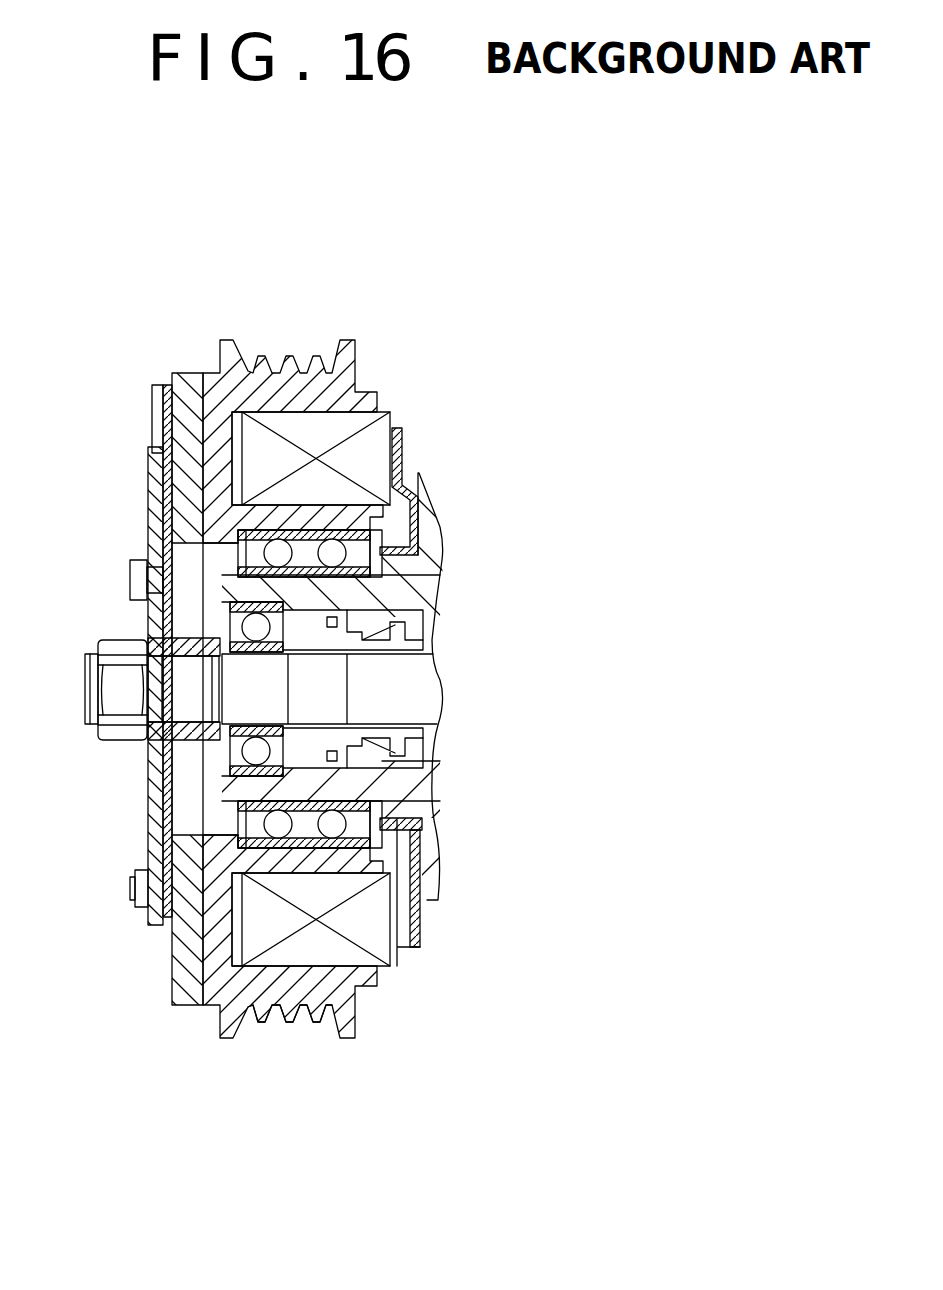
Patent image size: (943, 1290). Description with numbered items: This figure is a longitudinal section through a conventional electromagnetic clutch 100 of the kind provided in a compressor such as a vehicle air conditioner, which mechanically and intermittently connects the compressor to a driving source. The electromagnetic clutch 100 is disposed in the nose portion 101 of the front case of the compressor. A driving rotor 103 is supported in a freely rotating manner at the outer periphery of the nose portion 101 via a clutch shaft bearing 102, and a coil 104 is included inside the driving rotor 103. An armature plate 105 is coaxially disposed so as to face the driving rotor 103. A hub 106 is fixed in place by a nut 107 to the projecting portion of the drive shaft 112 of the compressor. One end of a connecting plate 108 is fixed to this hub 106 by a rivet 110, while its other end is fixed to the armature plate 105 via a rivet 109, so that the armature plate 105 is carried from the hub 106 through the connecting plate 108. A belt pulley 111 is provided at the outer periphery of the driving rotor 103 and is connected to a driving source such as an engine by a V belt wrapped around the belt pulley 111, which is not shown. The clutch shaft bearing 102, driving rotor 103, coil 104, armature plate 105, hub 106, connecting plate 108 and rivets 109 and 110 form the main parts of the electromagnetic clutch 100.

The electromagnetic clutch 100 is at (172, 345).
The nose portion 101 is at (304, 768).
The clutch shaft bearing 102 is at (338, 832).
The driving rotor 103 is at (351, 1038).
The coil 104 is at (253, 962).
The armature plate 105 is at (173, 992).
The hub 106 is at (148, 795).
The nut 107 is at (116, 640).
The connecting plate 108 is at (153, 418).
The rivet 109 is at (135, 888).
The rivet 110 is at (127, 572).
The belt pulley 111 is at (313, 1022).
The drive shaft 112 is at (397, 667).